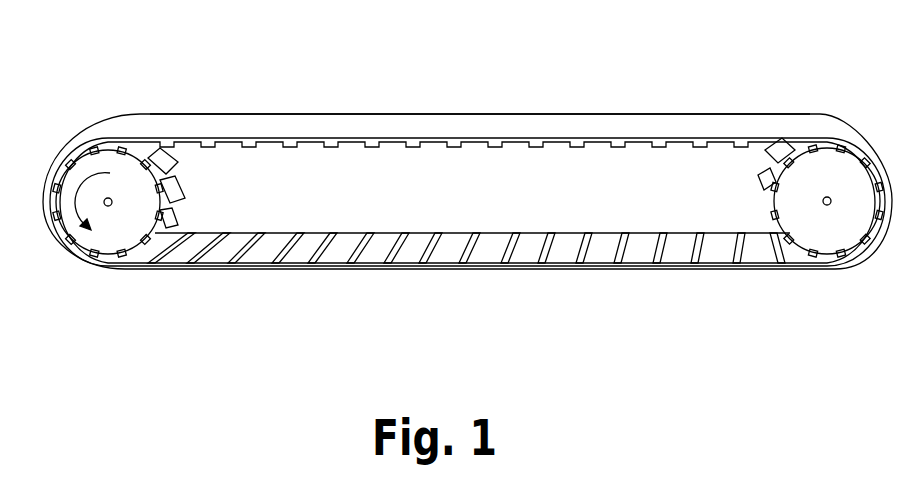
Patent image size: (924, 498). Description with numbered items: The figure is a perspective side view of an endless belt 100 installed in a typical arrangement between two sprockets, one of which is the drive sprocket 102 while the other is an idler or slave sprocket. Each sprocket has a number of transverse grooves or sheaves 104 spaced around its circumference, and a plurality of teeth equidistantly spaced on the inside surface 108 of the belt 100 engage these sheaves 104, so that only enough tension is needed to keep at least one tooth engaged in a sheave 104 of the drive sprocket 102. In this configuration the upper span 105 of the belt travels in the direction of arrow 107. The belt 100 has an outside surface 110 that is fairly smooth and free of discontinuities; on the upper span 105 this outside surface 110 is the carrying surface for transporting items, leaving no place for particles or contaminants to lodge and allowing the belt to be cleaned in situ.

The endless belt 100 is at (453, 173).
The drive sprocket 102 is at (468, 230).
The sheaves 104 is at (175, 189).
The upper span 105 is at (497, 123).
The arrow 107 is at (82, 188).
The inside surface 108 is at (363, 232).
The outside surface 110 is at (380, 125).